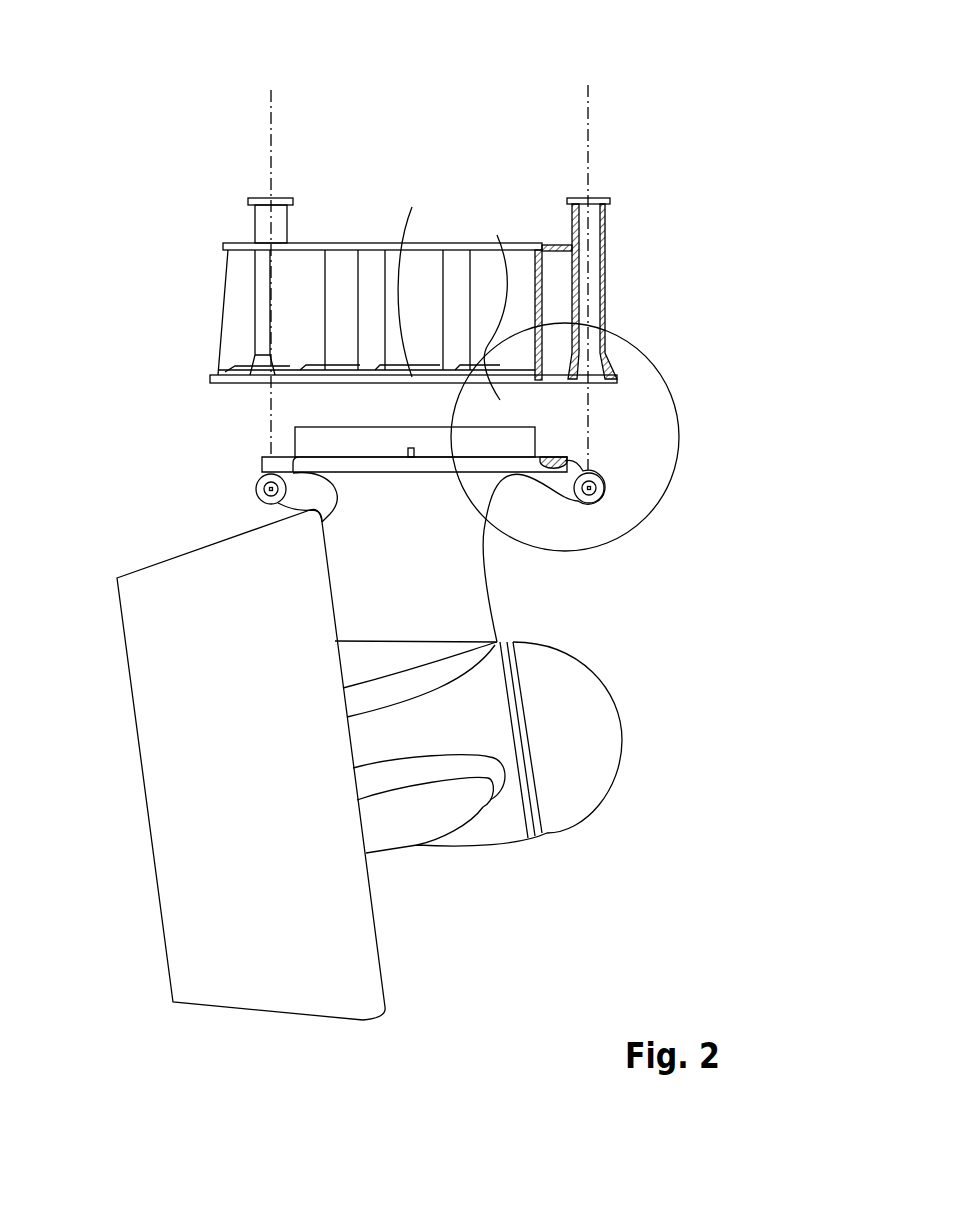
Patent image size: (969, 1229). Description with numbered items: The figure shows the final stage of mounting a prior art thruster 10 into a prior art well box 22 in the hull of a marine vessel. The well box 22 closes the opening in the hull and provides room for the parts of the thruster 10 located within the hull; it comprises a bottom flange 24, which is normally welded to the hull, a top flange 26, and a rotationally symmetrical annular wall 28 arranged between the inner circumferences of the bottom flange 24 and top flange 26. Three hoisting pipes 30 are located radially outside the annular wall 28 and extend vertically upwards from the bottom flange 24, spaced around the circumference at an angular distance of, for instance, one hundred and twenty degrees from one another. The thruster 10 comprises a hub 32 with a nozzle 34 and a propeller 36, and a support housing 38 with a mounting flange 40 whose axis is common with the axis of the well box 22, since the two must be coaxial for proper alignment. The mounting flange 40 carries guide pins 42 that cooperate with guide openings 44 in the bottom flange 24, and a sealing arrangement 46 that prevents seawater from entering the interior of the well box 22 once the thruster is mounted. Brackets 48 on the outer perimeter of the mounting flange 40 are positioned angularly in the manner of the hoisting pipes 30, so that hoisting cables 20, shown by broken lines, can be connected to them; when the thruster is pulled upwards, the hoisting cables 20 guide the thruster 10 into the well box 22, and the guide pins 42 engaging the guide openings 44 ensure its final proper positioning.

The thruster 10 is at (507, 888).
The hoisting cables 20 is at (270, 147).
The well box 22 is at (222, 227).
The bottom flange 24 is at (212, 382).
The top flange 26 is at (223, 250).
The annular wall 28 is at (537, 290).
The hoisting pipes 30 is at (278, 220).
The hub 32 is at (607, 647).
The nozzle 34 is at (242, 676).
The propeller 36 is at (417, 810).
The support housing 38 is at (412, 558).
The mounting flange 40 is at (280, 465).
The guide pins 42 is at (413, 452).
The guide openings 44 is at (415, 275).
The sealing arrangement 46 is at (563, 450).
The brackets 48 is at (254, 491).